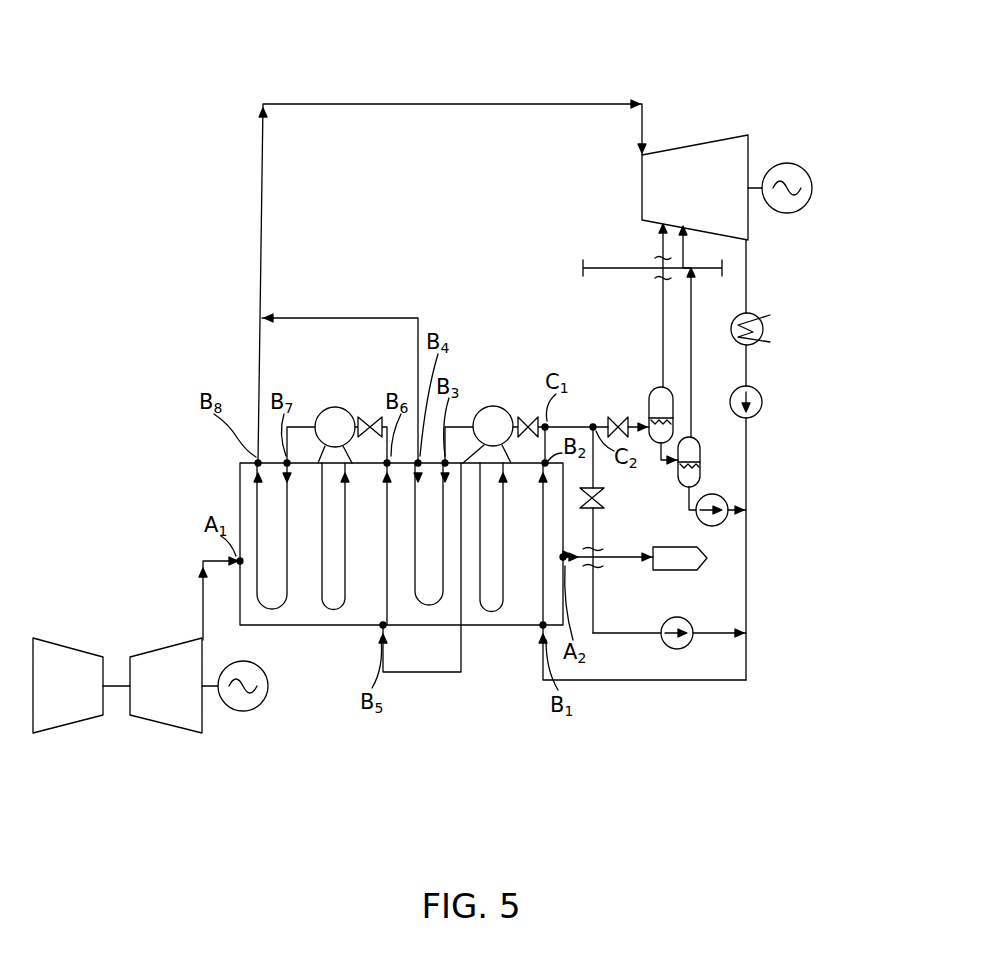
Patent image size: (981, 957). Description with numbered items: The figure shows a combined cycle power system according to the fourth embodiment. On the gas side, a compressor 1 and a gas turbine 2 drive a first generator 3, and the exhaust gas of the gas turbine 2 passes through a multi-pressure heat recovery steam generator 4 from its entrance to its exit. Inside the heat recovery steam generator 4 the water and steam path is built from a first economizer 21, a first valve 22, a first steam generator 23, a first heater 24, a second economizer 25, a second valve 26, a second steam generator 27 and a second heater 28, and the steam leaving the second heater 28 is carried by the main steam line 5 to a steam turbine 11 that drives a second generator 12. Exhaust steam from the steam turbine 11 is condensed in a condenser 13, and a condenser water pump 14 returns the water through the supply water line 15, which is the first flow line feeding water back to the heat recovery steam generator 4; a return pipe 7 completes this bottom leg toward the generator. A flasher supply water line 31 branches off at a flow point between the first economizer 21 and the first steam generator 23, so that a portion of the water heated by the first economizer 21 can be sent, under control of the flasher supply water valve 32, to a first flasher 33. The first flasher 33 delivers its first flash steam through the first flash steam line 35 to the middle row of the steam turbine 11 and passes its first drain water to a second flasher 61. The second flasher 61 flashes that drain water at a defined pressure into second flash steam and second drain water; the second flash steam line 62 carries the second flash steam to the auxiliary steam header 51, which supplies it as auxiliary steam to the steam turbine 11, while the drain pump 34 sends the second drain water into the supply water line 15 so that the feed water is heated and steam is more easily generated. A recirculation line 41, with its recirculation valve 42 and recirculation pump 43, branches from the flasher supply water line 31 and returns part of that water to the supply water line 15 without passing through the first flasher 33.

The compressor 1 is at (60, 733).
The gas turbine 2 is at (176, 733).
The first generator 3 is at (262, 706).
The heat recovery steam generator 4 is at (240, 475).
The main steam line 5 is at (332, 102).
The feed water return pipe 7 is at (621, 636).
The steam turbine 11 is at (701, 142).
The second generator 12 is at (787, 214).
The condenser 13 is at (760, 345).
The condenser water pump 14 is at (760, 418).
The supply water line 15 is at (750, 531).
The first economizer 21 is at (537, 608).
The first valve 22 is at (529, 415).
The first steam generator 23 is at (494, 419).
The first heater 24 is at (432, 606).
The second economizer 25 is at (375, 605).
The second valve 26 is at (371, 415).
The second steam generator 27 is at (334, 420).
The second heater 28 is at (278, 609).
The flasher supply water line 31 is at (592, 420).
The flasher supply water valve 32 is at (618, 417).
The first flasher 33 is at (652, 400).
The drain pump 34 is at (713, 528).
The first flash steam line 35 is at (660, 304).
The recirculation line 41 is at (598, 468).
The recirculation valve 42 is at (600, 502).
The recirculation pump 43 is at (677, 617).
The auxiliary steam header 51 is at (600, 264).
The second flasher 61 is at (679, 480).
The second flash steam line 62 is at (694, 335).